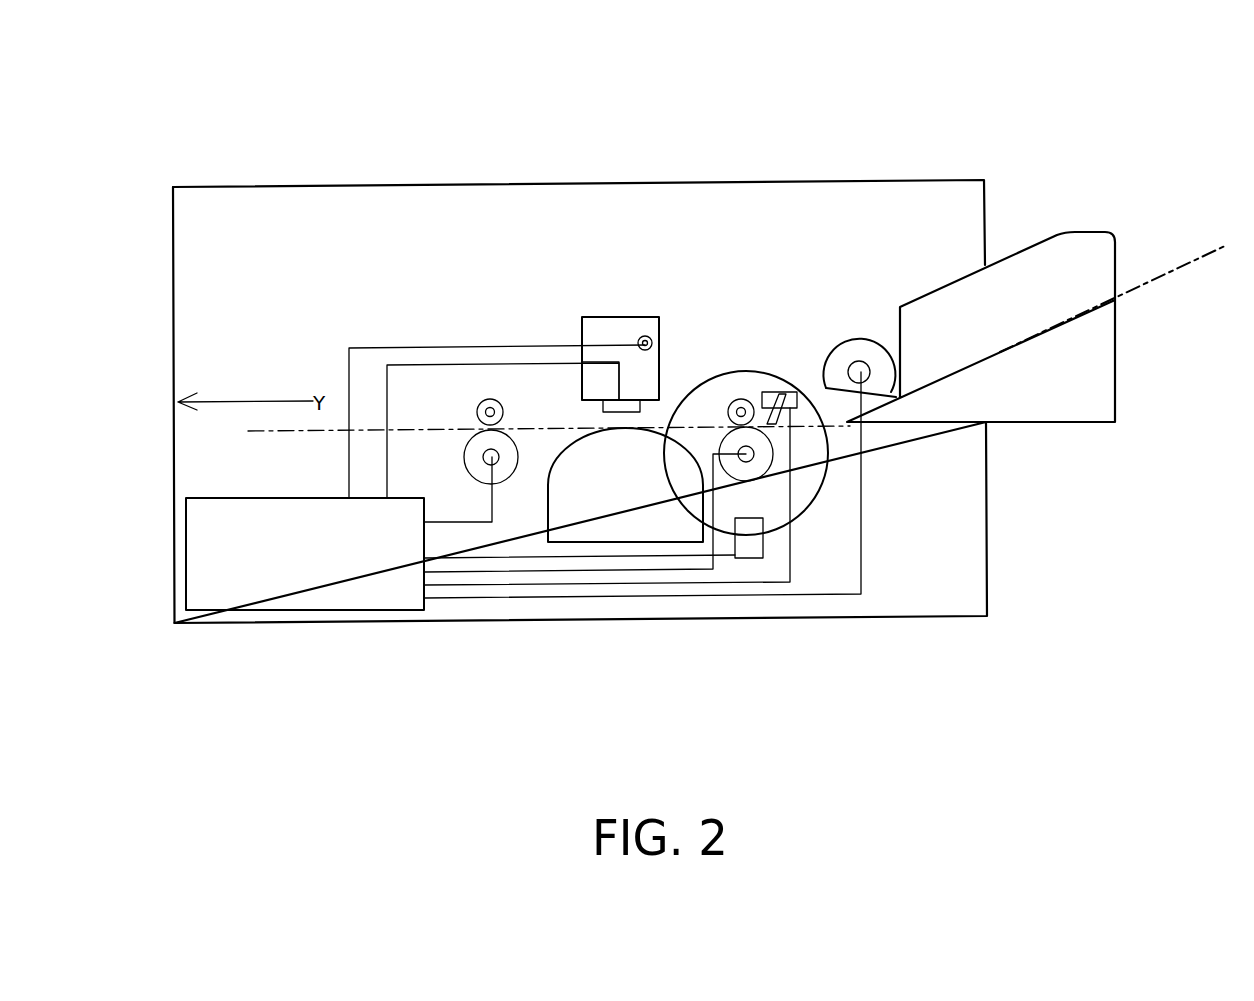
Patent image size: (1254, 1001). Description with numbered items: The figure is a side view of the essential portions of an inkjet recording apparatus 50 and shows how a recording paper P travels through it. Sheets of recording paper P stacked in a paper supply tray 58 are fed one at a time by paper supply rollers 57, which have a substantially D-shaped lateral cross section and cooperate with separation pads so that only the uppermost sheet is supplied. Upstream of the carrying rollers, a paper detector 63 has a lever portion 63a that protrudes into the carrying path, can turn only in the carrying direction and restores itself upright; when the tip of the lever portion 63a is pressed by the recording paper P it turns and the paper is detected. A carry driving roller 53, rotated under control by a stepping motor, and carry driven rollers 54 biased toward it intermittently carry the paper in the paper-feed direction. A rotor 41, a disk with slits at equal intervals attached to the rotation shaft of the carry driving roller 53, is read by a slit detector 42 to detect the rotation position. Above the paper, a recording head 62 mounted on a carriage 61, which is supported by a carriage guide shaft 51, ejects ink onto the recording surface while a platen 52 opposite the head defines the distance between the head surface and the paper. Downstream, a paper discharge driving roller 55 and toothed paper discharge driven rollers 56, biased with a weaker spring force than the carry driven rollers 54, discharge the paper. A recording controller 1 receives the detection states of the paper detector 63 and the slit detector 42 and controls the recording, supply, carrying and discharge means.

The recording controller 1 is at (322, 603).
The rotor 41 is at (710, 372).
The slit detector 42 is at (742, 558).
The inkjet recording apparatus 50 is at (248, 171).
The carriage guide shaft 51 is at (645, 336).
The platen 52 is at (607, 516).
The carry driving roller 53 is at (758, 473).
The carry driven rollers 54 is at (742, 399).
The paper discharge driving roller 55 is at (517, 470).
The paper discharge driven rollers 56 is at (478, 407).
The paper supply rollers 57 is at (833, 393).
The paper supply tray 58 is at (1013, 257).
The carriage 61 is at (612, 325).
The recording head 62 is at (595, 425).
The paper detector 63 is at (792, 392).
The lever portion 63a is at (792, 425).
The recording paper P is at (1142, 285).